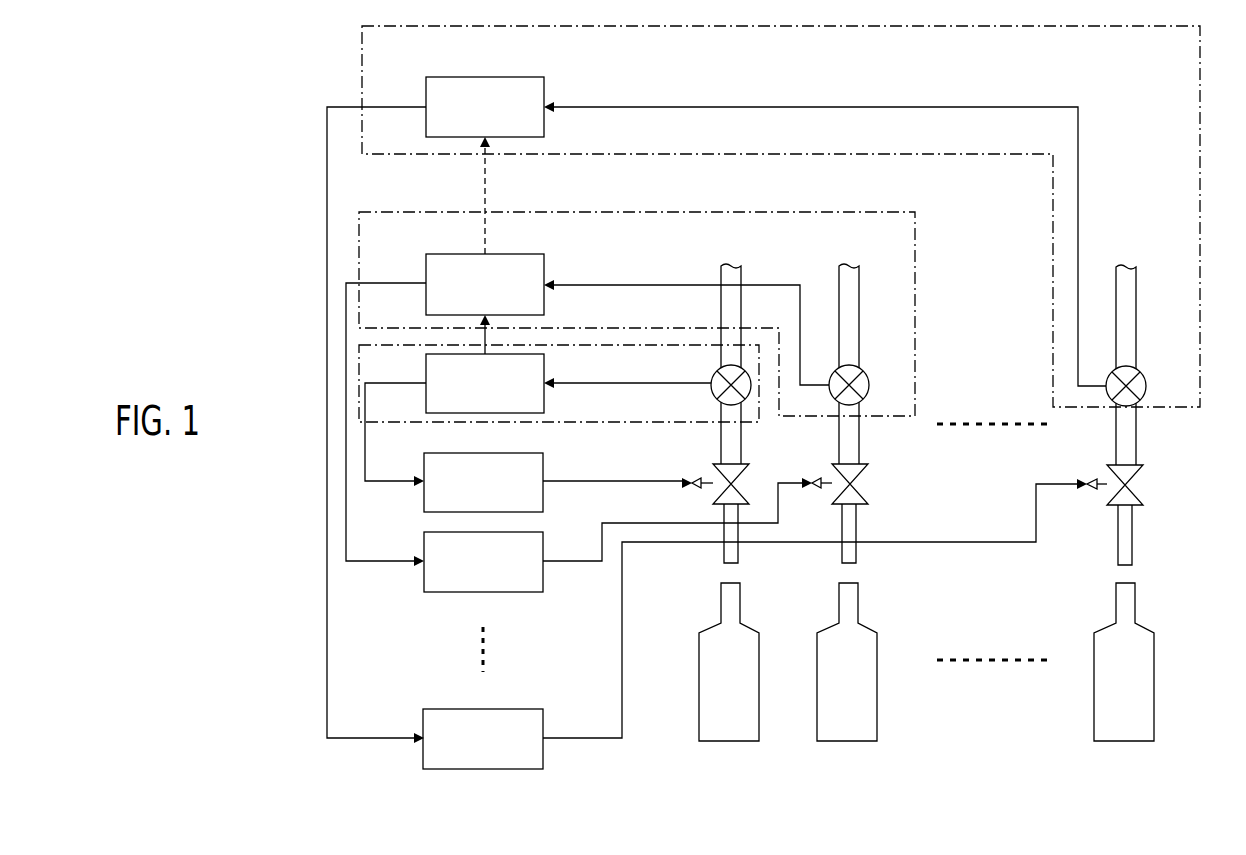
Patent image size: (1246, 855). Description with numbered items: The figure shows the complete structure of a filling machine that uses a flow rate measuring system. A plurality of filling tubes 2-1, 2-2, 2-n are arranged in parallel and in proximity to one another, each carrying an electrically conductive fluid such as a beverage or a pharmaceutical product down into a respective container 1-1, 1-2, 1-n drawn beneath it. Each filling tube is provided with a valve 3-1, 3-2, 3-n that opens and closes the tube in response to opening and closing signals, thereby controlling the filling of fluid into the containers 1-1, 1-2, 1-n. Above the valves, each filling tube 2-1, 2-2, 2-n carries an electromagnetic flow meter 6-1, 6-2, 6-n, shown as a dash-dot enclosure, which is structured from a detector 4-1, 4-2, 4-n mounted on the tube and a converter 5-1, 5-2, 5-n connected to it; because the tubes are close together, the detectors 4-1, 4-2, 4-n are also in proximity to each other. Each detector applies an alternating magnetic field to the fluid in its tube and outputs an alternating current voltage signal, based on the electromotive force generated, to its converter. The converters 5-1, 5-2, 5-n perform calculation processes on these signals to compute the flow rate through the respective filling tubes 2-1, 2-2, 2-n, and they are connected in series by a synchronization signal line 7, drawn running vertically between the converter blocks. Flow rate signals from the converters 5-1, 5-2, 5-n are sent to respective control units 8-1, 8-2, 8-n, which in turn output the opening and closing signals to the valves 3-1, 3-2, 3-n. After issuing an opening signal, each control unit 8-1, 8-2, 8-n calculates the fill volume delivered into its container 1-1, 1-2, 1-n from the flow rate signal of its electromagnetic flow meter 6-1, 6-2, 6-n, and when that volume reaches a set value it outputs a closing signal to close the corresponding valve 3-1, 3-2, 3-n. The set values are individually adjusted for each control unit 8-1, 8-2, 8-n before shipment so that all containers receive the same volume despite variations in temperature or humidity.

The container 1-1 is at (730, 743).
The container 1-2 is at (848, 743).
The container 1-n is at (1125, 743).
The filling tube 2-1 is at (741, 275).
The filling tube 2-2 is at (850, 285).
The filling tube 2-n is at (1135, 285).
The valve 3-1 is at (712, 468).
The valve 3-2 is at (858, 492).
The valve 3-n is at (1138, 494).
The detector 4-1 is at (745, 400).
The detector 4-2 is at (870, 385).
The detector 4-n is at (1147, 386).
The converter 5-1 is at (527, 413).
The converter 5-2 is at (516, 254).
The converter 5-n is at (516, 77).
The electromagnetic flow meter 6-1 is at (359, 386).
The electromagnetic flow meter 6-2 is at (359, 262).
The electromagnetic flow meter 6-n is at (362, 75).
The synchronization signal line 7 is at (485, 184).
The control unit 8-1 is at (424, 503).
The control unit 8-2 is at (424, 582).
The control unit 8-n is at (424, 760).